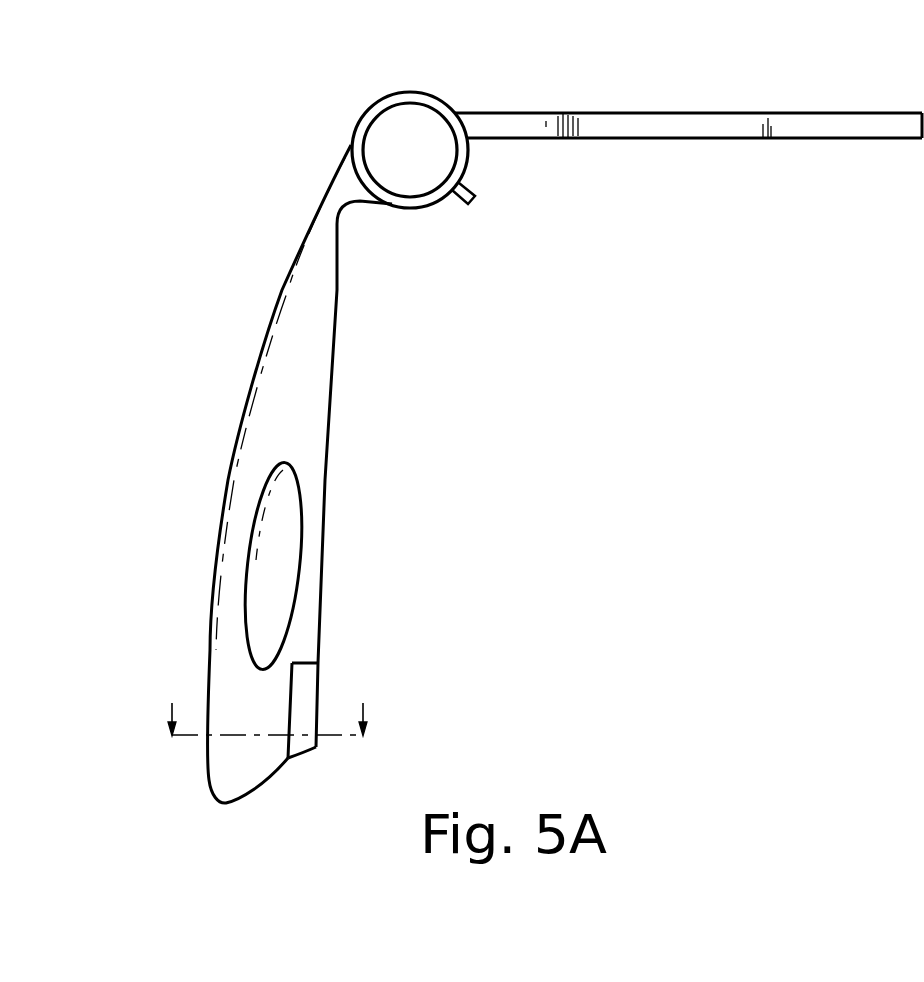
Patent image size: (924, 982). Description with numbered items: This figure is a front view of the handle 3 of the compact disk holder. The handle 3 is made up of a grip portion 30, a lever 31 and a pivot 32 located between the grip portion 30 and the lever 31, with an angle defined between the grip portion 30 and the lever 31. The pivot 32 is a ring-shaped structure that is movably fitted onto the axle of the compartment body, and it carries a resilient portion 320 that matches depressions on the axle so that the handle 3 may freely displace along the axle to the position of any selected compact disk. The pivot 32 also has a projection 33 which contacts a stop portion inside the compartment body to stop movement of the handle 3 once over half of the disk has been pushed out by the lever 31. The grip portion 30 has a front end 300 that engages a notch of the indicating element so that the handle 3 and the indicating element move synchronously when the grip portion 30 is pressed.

The handle 3 is at (340, 378).
The grip portion 30 is at (235, 540).
The front end of the grip portion 300 is at (308, 682).
The lever 31 is at (800, 127).
The pivot 32 is at (353, 146).
The resilient portion 320 is at (383, 117).
The projection 33 is at (477, 190).